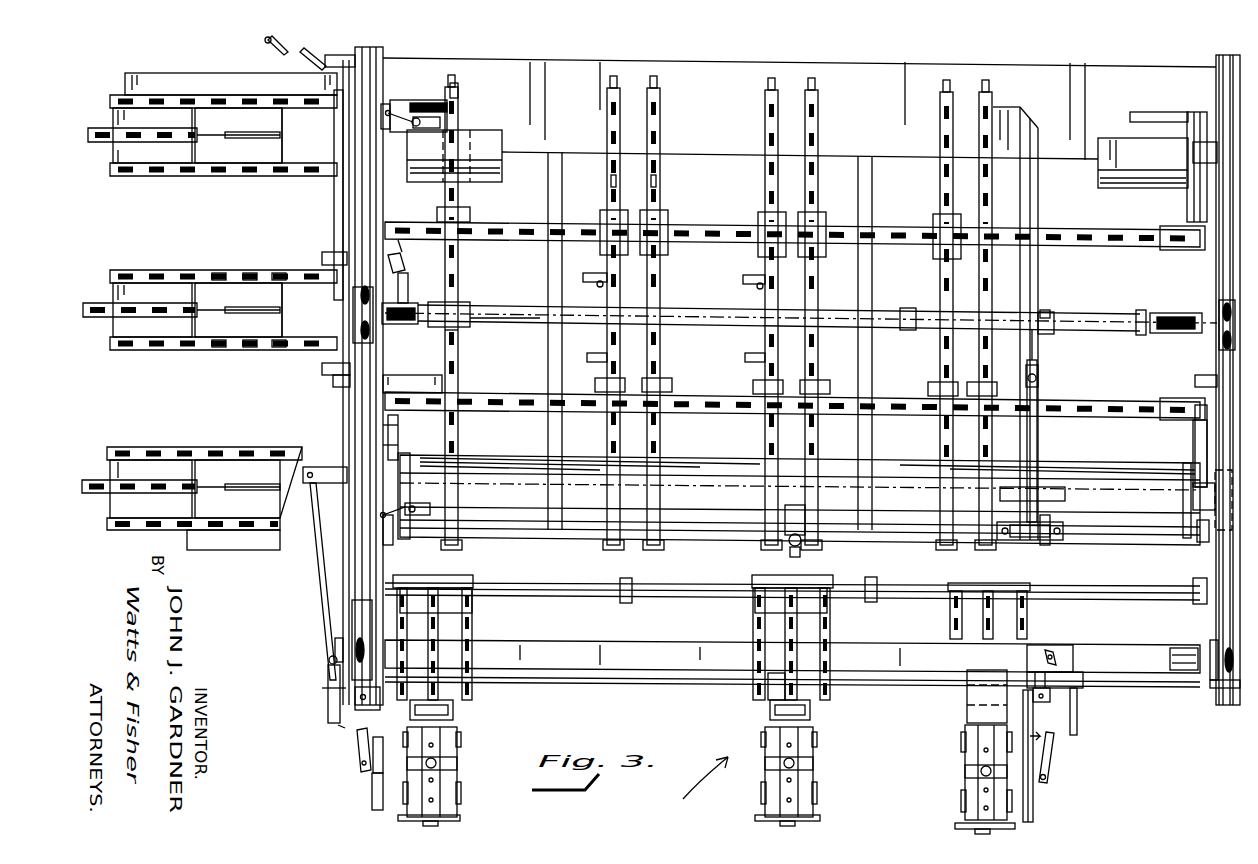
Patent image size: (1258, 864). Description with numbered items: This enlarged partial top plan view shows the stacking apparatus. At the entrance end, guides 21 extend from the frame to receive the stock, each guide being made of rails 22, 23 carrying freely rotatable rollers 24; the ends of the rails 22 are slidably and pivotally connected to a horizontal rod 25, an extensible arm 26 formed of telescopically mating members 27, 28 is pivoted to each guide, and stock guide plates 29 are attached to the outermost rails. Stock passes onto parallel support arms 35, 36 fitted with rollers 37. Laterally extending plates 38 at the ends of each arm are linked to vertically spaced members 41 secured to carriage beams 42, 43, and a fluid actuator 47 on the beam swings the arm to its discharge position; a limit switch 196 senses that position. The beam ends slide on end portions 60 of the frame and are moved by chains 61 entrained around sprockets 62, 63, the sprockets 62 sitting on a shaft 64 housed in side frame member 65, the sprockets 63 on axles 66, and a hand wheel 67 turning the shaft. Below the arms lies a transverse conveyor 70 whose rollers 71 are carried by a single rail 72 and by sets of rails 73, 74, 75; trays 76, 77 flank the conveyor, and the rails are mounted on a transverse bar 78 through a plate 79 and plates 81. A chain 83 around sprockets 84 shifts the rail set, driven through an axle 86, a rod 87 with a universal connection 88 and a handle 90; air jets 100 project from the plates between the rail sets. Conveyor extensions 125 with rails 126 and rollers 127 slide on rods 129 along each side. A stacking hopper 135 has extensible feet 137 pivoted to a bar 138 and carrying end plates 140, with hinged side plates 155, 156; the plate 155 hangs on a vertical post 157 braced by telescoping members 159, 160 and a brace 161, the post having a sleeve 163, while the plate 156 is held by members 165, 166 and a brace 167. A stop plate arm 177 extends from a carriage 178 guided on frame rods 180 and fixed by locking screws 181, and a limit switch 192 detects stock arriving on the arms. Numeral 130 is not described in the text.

The guide 21 is at (193, 176).
The rail 22 is at (118, 95).
The rail 23 is at (100, 142).
The roller 24 is at (218, 270).
The horizontal rod 25 is at (343, 195).
The extensible arm 26 is at (240, 133).
The telescopically mating member 27 is at (212, 348).
The telescopically mating member 28 is at (276, 348).
The stock guide plate 29 is at (163, 75).
The support arm 35 is at (500, 398).
The support arm 36 is at (505, 222).
The roller 37 is at (700, 224).
The laterally extending plate 38 is at (388, 415).
The vertically spaced member 41 is at (393, 545).
The carriage beam 42 is at (492, 455).
The carriage beam 43 is at (482, 135).
The double-acting fluid actuator 47 is at (795, 546).
The end portion of the frame 60 is at (340, 383).
The chain 61 is at (352, 220).
The sprocket 62 is at (355, 640).
The sprocket 63 is at (330, 258).
The shaft 64 is at (1184, 672).
The side frame member 65 is at (610, 650).
The axle 66 is at (369, 294).
The hand wheel 67 is at (335, 646).
The conveyor 70 is at (515, 330).
The roller 71 is at (620, 183).
The rail 72 is at (460, 332).
The set of rails 73 is at (607, 196).
The set of rails 74 is at (818, 112).
The set of rails 75 is at (992, 170).
The tray 76 is at (408, 376).
The tray 77 is at (1038, 273).
The bar 78 is at (510, 306).
The plate 79 is at (460, 262).
The plate 81 is at (660, 375).
The chain 83 is at (705, 305).
The sprocket 84 is at (408, 324).
The axle 86 is at (408, 285).
The rod 87 is at (305, 58).
The universal connection 88 is at (405, 262).
The handle 90 is at (270, 46).
The air jet 100 is at (612, 282).
The conveyor extension 125 is at (482, 620).
The rail 126 is at (475, 655).
The roller 127 is at (470, 600).
The rod 129 is at (1158, 115).
The clamp mount 130 is at (770, 722).
The stacking hopper 135 is at (683, 799).
The axially extensible foot 137 is at (457, 778).
The bar 138 is at (907, 687).
The vertical end plate 140 is at (460, 818).
The side plate 155 is at (1033, 806).
The side plate 156 is at (372, 797).
The vertical post 157 is at (1048, 702).
The telescopically engaged member 159 is at (1052, 750).
The telescopically engaged member 160 is at (1077, 728).
The brace 161 is at (1076, 690).
The sleeve 163 is at (1062, 645).
The telescopically engaged member 165 is at (328, 712).
The telescopically engaged member 166 is at (322, 582).
The brace 167 is at (314, 467).
The arm 177 is at (1037, 445).
The carriage 178 is at (1046, 540).
The frame rod 180 is at (1142, 540).
The locking screw 181 is at (1063, 525).
The limit switch 192 is at (1040, 380).
The limit switch 196 is at (416, 118).